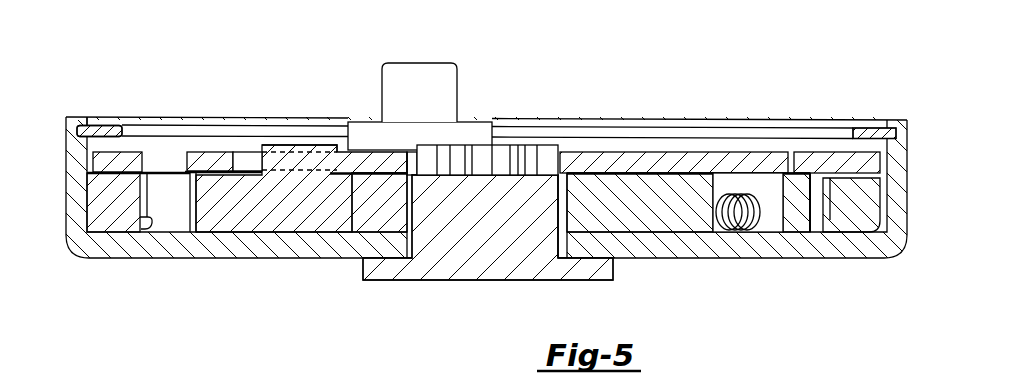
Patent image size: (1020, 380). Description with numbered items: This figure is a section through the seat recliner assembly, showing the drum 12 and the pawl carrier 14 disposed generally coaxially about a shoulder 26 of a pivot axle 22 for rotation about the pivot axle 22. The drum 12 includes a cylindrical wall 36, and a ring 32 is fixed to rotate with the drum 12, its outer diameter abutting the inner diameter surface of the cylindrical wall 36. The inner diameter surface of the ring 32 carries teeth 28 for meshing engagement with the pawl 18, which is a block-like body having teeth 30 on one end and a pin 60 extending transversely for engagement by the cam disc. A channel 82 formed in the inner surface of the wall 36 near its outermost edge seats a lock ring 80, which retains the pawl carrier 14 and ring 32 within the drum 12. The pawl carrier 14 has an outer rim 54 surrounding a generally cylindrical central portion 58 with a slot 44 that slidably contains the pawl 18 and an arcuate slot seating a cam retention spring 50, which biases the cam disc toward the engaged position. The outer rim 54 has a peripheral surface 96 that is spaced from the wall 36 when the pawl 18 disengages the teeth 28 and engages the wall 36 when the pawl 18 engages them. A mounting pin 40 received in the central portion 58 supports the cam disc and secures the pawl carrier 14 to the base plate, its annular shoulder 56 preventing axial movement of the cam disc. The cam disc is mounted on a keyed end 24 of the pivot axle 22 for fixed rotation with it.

The drum 12 is at (66, 160).
The pawl carrier 14 is at (710, 160).
The pawl 18 is at (279, 229).
The pivot axle 22 is at (476, 282).
The keyed end 24 is at (550, 168).
The shoulder 26 is at (408, 215).
The teeth 28 is at (150, 222).
The teeth 30 is at (193, 222).
The ring 32 is at (94, 221).
The cylindrical wall 36 is at (862, 138).
The mounting pin 40 is at (462, 84).
The slot 44 is at (240, 160).
The cam retention spring 50 is at (739, 192).
The outer rim 54 is at (880, 174).
The annular shoulder 56 is at (366, 130).
The central portion 58 is at (666, 218).
The pin 60 is at (258, 152).
The lock ring 80 is at (115, 126).
The channel 82 is at (82, 126).
The peripheral surface 96 is at (868, 169).